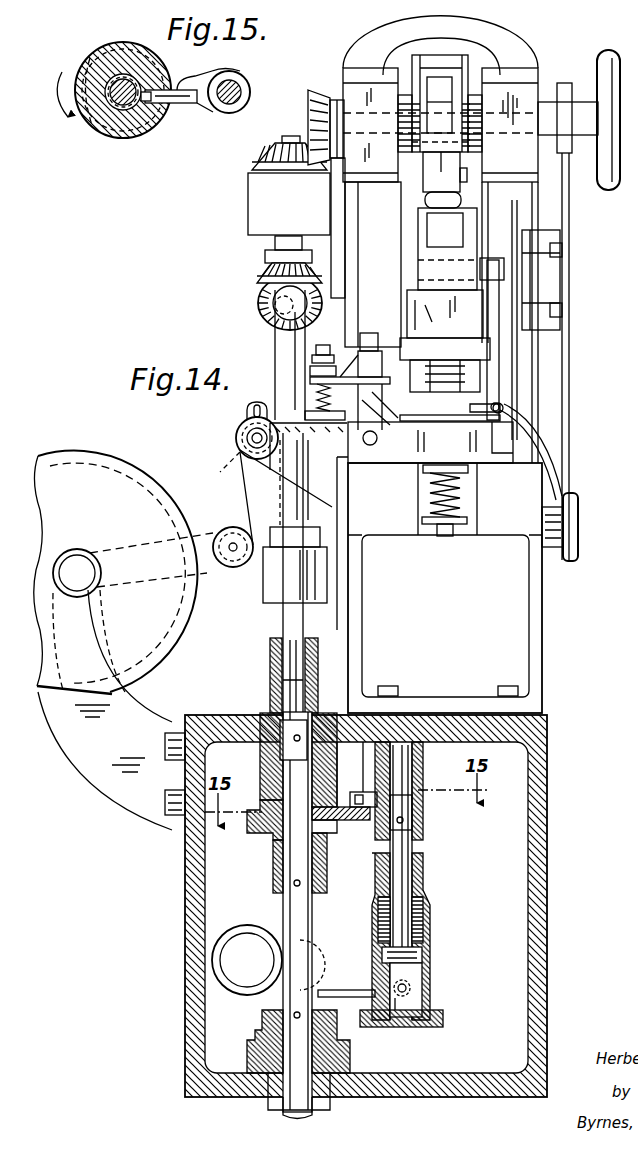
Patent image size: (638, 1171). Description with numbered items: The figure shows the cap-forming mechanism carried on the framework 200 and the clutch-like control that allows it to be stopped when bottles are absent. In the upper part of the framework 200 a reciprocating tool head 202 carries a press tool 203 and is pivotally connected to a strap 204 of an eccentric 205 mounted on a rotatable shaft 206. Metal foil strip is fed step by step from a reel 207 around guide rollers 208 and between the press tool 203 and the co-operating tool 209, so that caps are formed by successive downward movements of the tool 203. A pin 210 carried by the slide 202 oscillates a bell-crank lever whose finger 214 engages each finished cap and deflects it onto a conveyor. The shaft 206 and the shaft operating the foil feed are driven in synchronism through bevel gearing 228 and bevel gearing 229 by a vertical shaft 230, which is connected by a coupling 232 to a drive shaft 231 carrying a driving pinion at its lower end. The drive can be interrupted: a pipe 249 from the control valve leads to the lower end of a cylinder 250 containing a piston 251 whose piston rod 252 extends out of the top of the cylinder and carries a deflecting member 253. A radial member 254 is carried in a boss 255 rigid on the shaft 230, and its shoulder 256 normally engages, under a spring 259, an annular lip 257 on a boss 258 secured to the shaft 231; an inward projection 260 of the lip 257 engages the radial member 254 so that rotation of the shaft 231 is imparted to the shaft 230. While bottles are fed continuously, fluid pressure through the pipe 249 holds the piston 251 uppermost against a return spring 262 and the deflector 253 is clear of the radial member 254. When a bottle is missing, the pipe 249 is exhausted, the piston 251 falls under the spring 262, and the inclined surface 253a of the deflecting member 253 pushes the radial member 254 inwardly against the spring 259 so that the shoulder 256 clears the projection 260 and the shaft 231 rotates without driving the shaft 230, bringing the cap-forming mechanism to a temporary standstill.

In FIG. 14, the framework 200 is at (540, 633).
In FIG. 14, the reciprocating tool head 202 is at (437, 318).
In FIG. 14, the press tool 203 is at (423, 350).
In FIG. 14, the strap 204 is at (443, 70).
In FIG. 14, the eccentric 205 is at (470, 62).
In FIG. 14, the rotatable shaft 206 is at (360, 115).
In FIG. 14, the reel 207 is at (75, 472).
In FIG. 14, the guide rollers 208 is at (231, 520).
In FIG. 14, the co-operating tool 209 is at (419, 500).
In FIG. 14, the pin 210 is at (484, 260).
In FIG. 14, the finger 214 is at (395, 466).
In FIG. 14, the bevel gearing 228 is at (306, 145).
In FIG. 14, the bevel gearing 229 is at (258, 304).
In FIG. 14, the vertical shaft 230 is at (278, 347).
In FIG. 14, the drive shaft 231 is at (292, 1104).
In FIG. 14, the coupling 232 is at (275, 664).
In FIG. 14, the pipe 249 is at (342, 990).
In FIG. 14, the cylinder 250 is at (425, 971).
In FIG. 14, the piston 251 is at (420, 949).
In FIG. 14, the piston rod 252 is at (405, 845).
In FIG. 15, the deflecting member 253 is at (193, 82).
In FIG. 14, the deflecting member 253 is at (412, 800).
In FIG. 15, the inclined surface 253a is at (243, 73).
In FIG. 15, the radial member 254 is at (185, 103).
In FIG. 15, the boss 255 is at (127, 130).
In FIG. 14, the boss 255 is at (280, 800).
In FIG. 14, the shoulder 256 is at (339, 863).
In FIG. 14, the annular lip 257 is at (330, 838).
In FIG. 14, the boss 258 is at (277, 862).
In FIG. 14, the spring 259 is at (352, 792).
In FIG. 15, the inward projection 260 is at (167, 127).
In FIG. 14, the return spring 262 is at (423, 902).